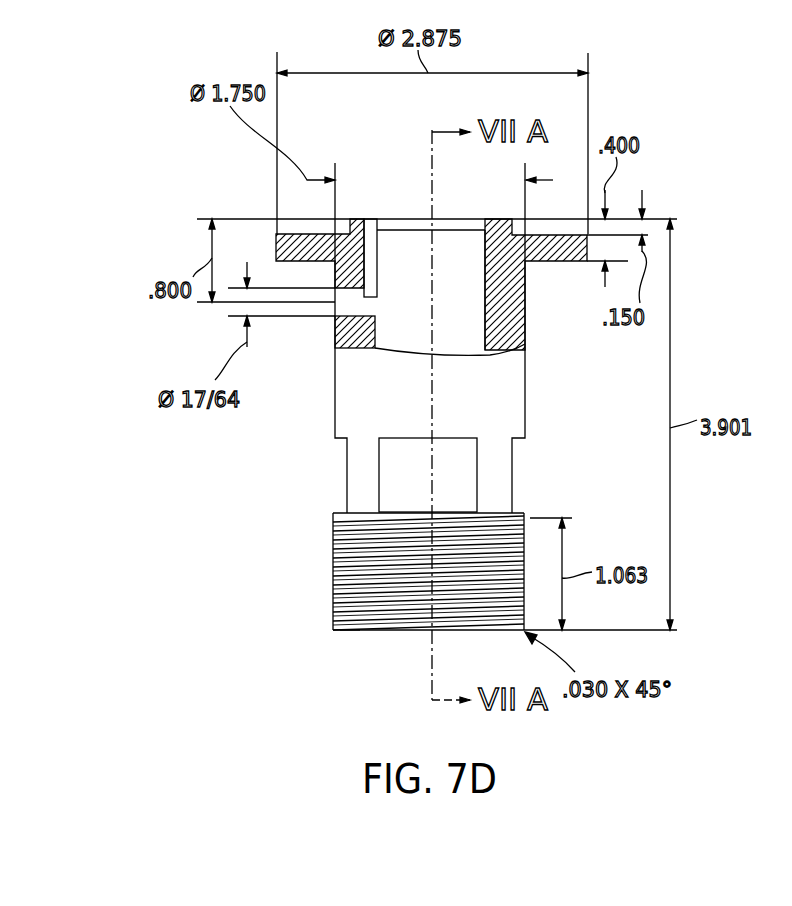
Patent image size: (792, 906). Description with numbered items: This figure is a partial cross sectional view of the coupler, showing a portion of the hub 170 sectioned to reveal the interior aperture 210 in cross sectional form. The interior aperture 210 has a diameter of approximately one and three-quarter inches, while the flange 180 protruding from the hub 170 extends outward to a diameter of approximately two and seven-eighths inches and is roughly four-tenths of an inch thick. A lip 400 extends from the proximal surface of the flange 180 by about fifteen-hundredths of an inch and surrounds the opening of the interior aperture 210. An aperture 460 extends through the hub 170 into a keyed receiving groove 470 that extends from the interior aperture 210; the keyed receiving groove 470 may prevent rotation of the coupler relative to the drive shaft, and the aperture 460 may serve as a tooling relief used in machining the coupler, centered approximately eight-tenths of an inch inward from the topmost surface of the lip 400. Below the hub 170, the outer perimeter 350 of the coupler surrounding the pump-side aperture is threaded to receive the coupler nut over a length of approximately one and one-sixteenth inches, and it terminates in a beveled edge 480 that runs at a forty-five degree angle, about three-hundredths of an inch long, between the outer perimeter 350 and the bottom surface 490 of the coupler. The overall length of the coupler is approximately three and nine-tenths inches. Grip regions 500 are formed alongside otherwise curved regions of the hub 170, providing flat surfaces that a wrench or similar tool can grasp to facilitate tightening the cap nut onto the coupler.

The hub 170 is at (527, 400).
The flange 180 is at (295, 238).
The interior aperture 210 is at (418, 252).
The outer perimeter 350 is at (326, 569).
The lip 400 is at (340, 218).
The aperture 460 is at (340, 312).
The keyed receiving groove 470 is at (387, 349).
The beveled edge 480 is at (333, 632).
The bottom surface 490 is at (350, 632).
The grip regions 500 is at (346, 470).